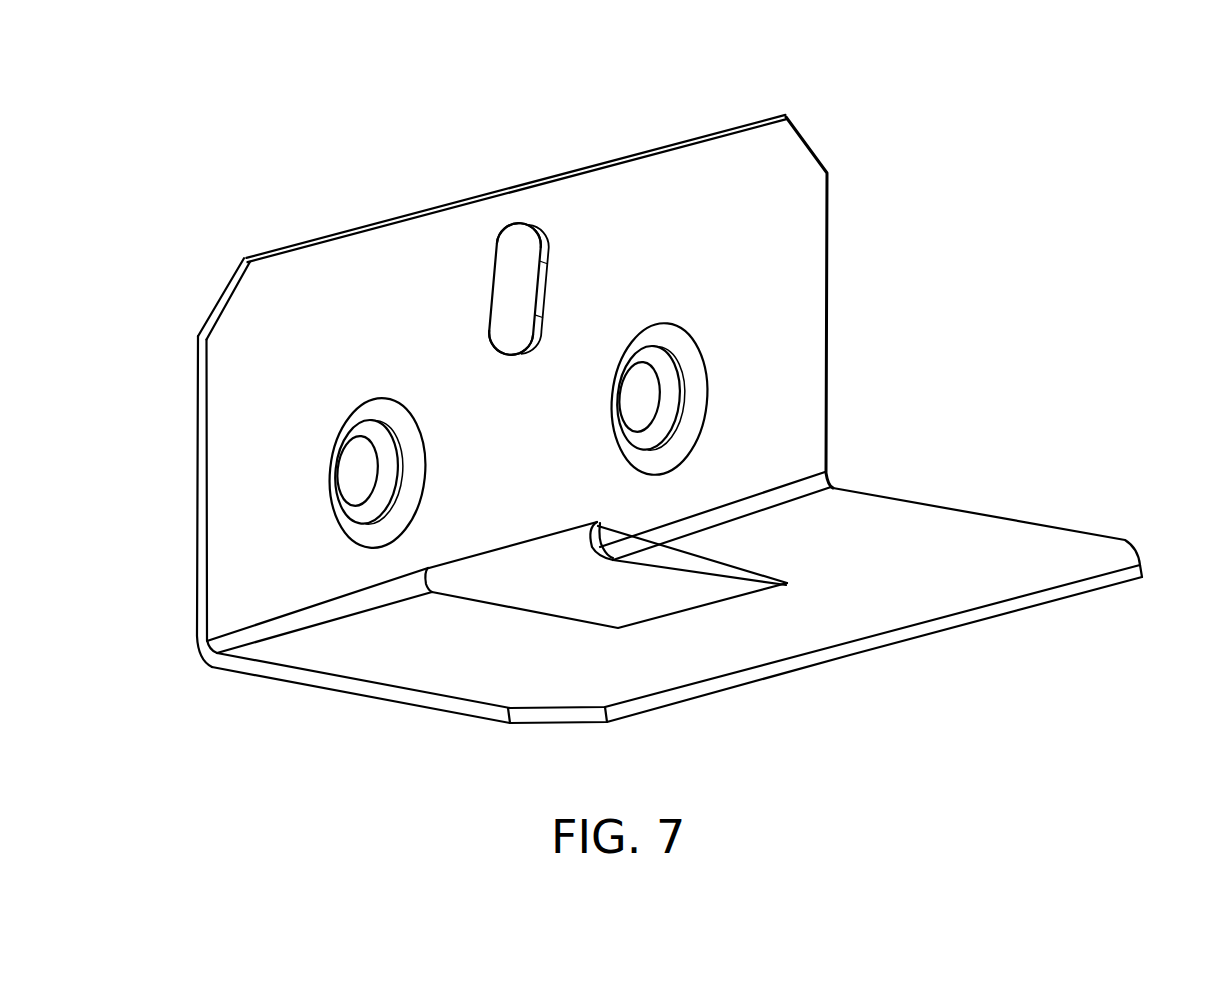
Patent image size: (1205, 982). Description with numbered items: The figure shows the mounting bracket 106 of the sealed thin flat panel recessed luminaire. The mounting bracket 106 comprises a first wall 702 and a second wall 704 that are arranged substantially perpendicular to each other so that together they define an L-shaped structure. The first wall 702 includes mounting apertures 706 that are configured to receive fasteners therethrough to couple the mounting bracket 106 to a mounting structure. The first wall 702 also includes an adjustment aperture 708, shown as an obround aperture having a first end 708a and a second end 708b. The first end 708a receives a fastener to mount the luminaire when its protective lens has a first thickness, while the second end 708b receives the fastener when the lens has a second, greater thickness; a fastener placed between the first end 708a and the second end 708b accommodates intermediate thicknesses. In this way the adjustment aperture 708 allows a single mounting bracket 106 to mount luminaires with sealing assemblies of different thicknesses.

The mounting bracket 106 is at (619, 395).
The first wall 702 is at (740, 307).
The second wall 704 is at (902, 530).
The mounting apertures 706 is at (640, 401).
The adjustment aperture 708 is at (507, 282).
The first end 708a is at (490, 258).
The second end 708b is at (490, 333).